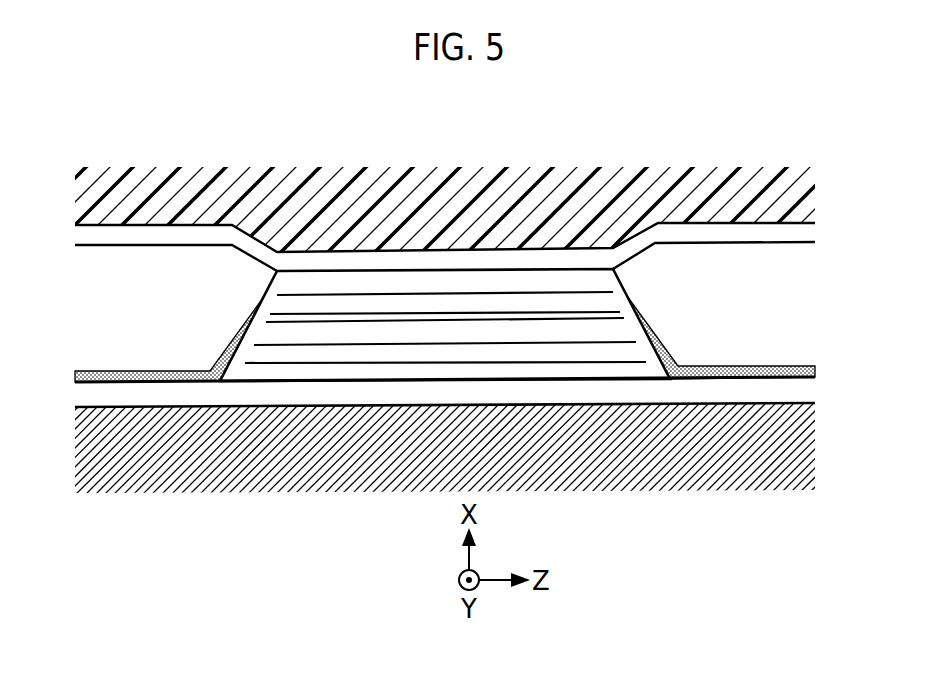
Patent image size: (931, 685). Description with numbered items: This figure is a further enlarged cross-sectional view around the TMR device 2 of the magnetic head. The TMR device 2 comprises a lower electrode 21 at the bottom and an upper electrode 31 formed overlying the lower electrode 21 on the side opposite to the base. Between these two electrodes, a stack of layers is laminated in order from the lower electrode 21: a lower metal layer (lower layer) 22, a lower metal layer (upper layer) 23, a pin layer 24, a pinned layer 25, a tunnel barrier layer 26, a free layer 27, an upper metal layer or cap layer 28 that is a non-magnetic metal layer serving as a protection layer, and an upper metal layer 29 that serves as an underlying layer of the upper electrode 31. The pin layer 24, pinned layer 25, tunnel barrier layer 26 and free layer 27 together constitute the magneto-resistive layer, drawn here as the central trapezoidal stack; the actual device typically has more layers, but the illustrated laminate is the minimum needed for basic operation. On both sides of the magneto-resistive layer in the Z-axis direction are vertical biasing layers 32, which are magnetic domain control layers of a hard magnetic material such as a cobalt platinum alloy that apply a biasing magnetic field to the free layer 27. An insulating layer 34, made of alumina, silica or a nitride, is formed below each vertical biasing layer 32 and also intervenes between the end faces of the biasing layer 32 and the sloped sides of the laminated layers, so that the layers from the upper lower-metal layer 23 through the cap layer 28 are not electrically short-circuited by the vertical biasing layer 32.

The TMR device 2 is at (445, 242).
The lower electrode 21 is at (805, 459).
The lower metal layer (lower layer) 22 is at (748, 395).
The lower metal layer (upper layer) 23 is at (288, 374).
The pin layer 24 is at (342, 355).
The pinned layer 25 is at (382, 335).
The tunnel barrier layer 26 is at (483, 313).
The free layer 27 is at (527, 300).
The upper metal layer (cap layer) 28 is at (578, 282).
The upper metal layer 29 is at (797, 228).
The upper electrode 31 is at (206, 196).
The vertical biasing layer 32 is at (158, 306).
The insulating layer 34 is at (123, 371).